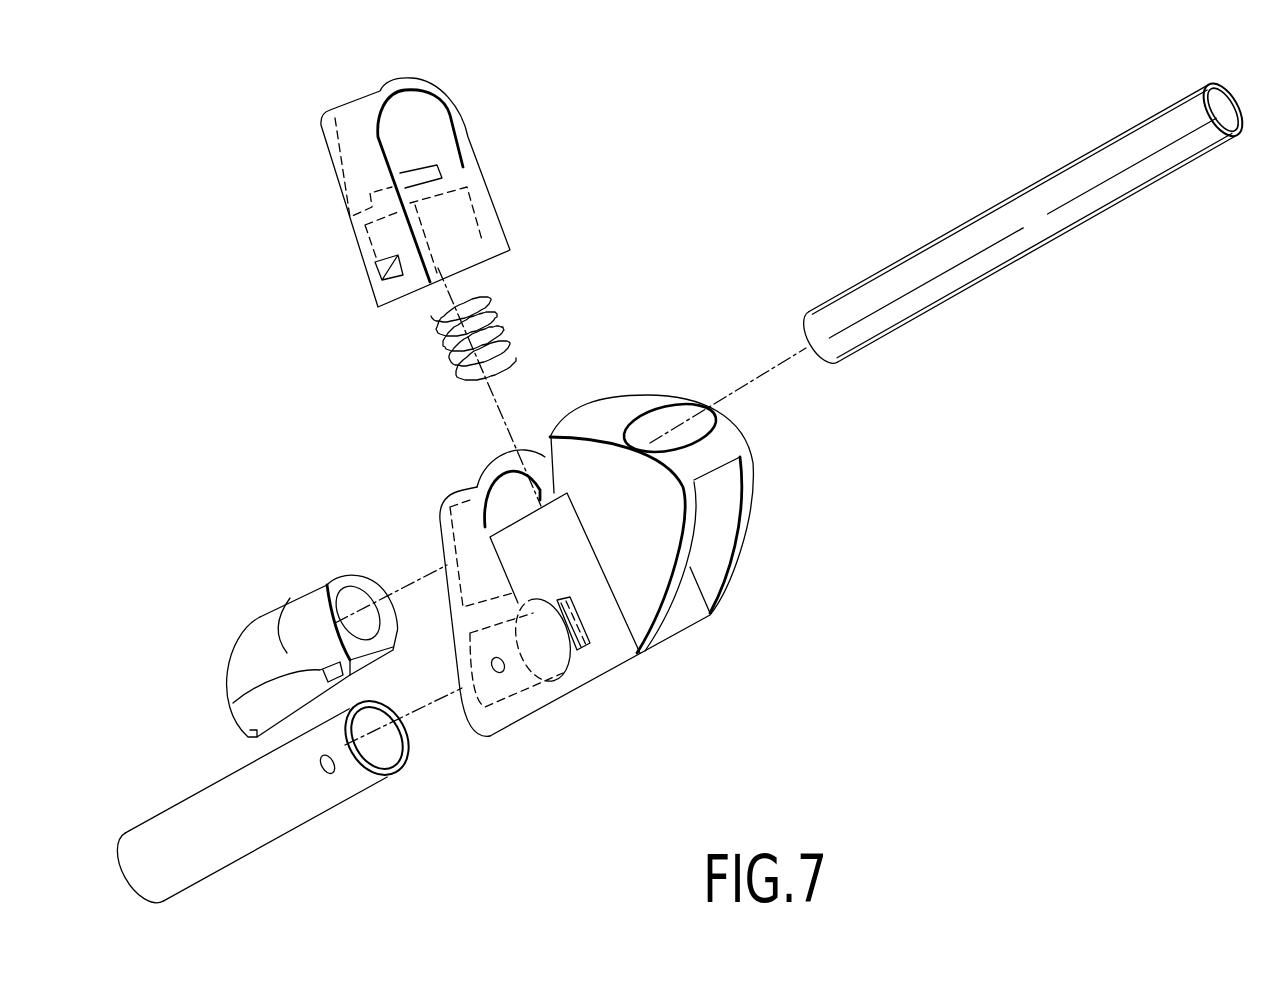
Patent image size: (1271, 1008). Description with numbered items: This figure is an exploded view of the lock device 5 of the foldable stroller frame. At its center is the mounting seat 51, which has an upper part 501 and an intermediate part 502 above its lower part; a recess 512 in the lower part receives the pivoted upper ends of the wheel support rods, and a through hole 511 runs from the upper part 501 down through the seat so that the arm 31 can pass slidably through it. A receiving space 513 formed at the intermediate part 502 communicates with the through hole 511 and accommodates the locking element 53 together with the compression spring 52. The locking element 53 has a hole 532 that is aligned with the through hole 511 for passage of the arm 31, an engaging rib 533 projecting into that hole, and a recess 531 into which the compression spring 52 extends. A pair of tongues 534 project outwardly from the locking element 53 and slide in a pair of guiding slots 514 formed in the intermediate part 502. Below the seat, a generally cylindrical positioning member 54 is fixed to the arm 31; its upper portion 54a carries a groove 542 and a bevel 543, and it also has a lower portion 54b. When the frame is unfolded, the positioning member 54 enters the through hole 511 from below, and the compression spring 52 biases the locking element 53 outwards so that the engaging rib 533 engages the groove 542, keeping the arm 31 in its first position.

The lock device 5 is at (297, 143).
The locking element 53 is at (367, 93).
The recess 531 is at (497, 215).
The hole 532 is at (420, 123).
The engaging rib 533 is at (340, 217).
The tongues 534 is at (377, 273).
The compression spring 52 is at (500, 333).
The mounting seat 51 is at (730, 603).
The through hole 511 is at (667, 417).
The receiving space 513 is at (517, 487).
The guiding slots 514 is at (580, 653).
The recess 512 is at (500, 700).
The upper part 501 is at (690, 617).
The intermediate part 502 is at (620, 657).
The positioning member 54 is at (250, 650).
The upper portion 54a is at (317, 607).
The lower portion 54b is at (263, 617).
The groove 542 is at (233, 703).
The bevel 543 is at (383, 650).
The arm 31 is at (1040, 227).